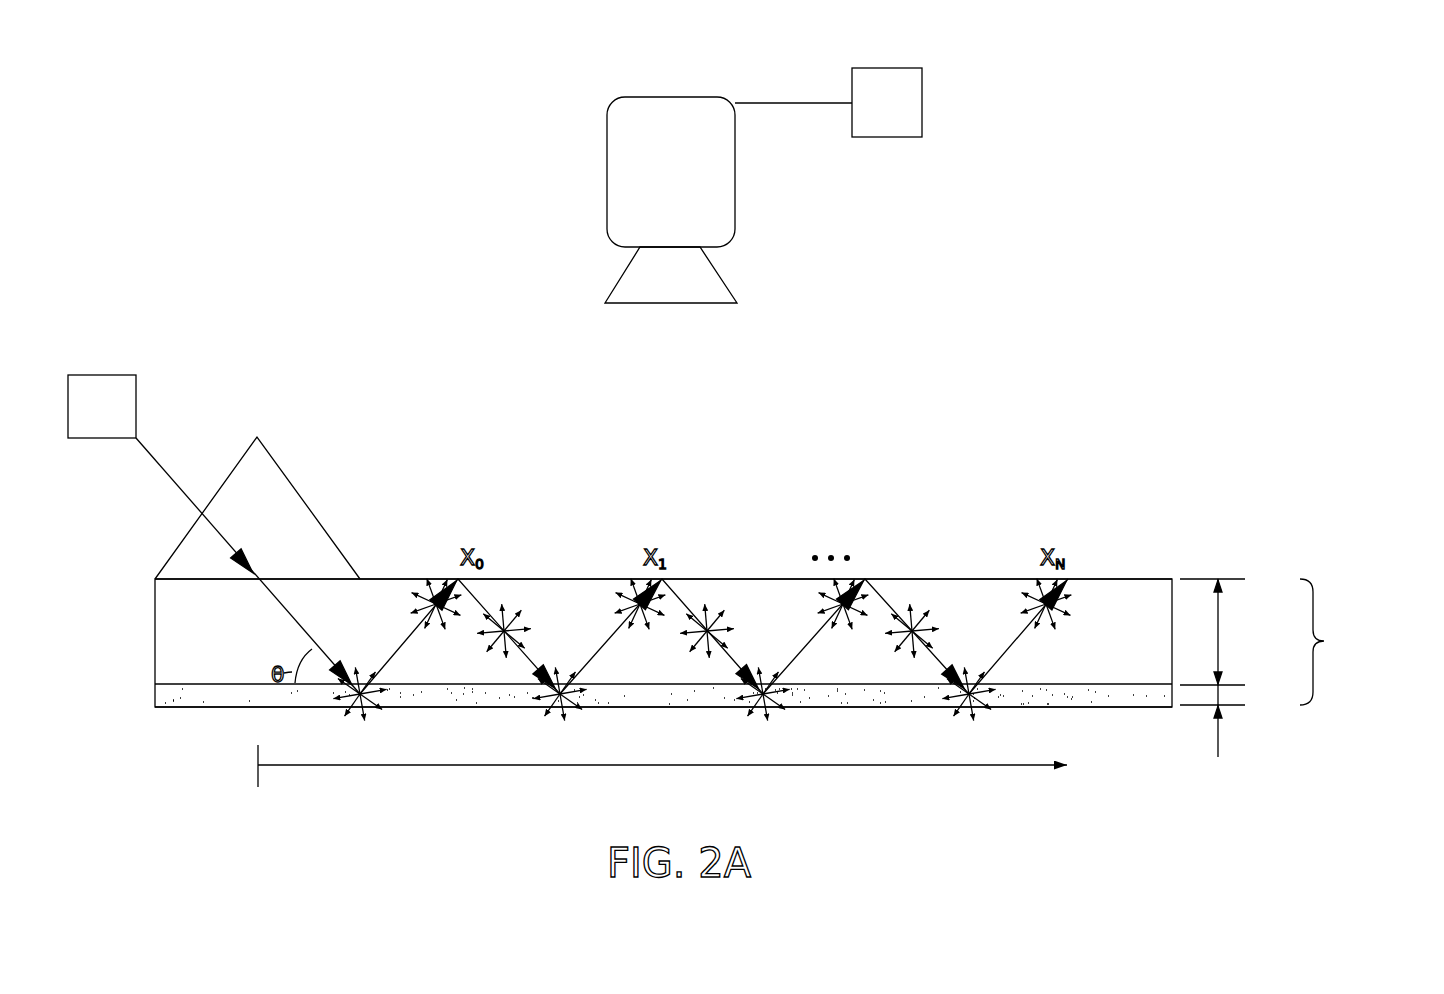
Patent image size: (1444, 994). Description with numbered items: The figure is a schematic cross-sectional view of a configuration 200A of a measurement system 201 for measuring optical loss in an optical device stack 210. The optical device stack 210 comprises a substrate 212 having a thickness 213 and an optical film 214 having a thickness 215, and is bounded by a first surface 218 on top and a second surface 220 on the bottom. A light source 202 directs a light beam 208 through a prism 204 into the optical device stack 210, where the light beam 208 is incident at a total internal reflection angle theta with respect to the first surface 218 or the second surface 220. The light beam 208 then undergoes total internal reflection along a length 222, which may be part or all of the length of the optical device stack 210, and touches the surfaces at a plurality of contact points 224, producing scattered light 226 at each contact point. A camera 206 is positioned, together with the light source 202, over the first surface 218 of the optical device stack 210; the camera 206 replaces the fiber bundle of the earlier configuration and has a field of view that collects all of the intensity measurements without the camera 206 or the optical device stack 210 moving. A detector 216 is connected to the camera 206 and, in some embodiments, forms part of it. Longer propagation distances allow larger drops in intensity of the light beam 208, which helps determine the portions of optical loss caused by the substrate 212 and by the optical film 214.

The configuration 200A is at (1248, 142).
The measurement system 201 is at (1362, 165).
The light source 202 is at (122, 416).
The prism 204 is at (285, 476).
The camera 206 is at (607, 165).
The light beam 208 is at (160, 473).
The optical device stack 210 is at (775, 632).
The substrate 212 is at (1118, 659).
The thickness 213 is at (1218, 632).
The optical film 214 is at (1083, 697).
The thickness 215 is at (1218, 697).
The detector 216 is at (908, 116).
The first surface 218 is at (933, 578).
The second surface 220 is at (857, 708).
The length 222 is at (733, 767).
The plurality of contact points 224 is at (710, 543).
The scattered light 226 is at (438, 578).